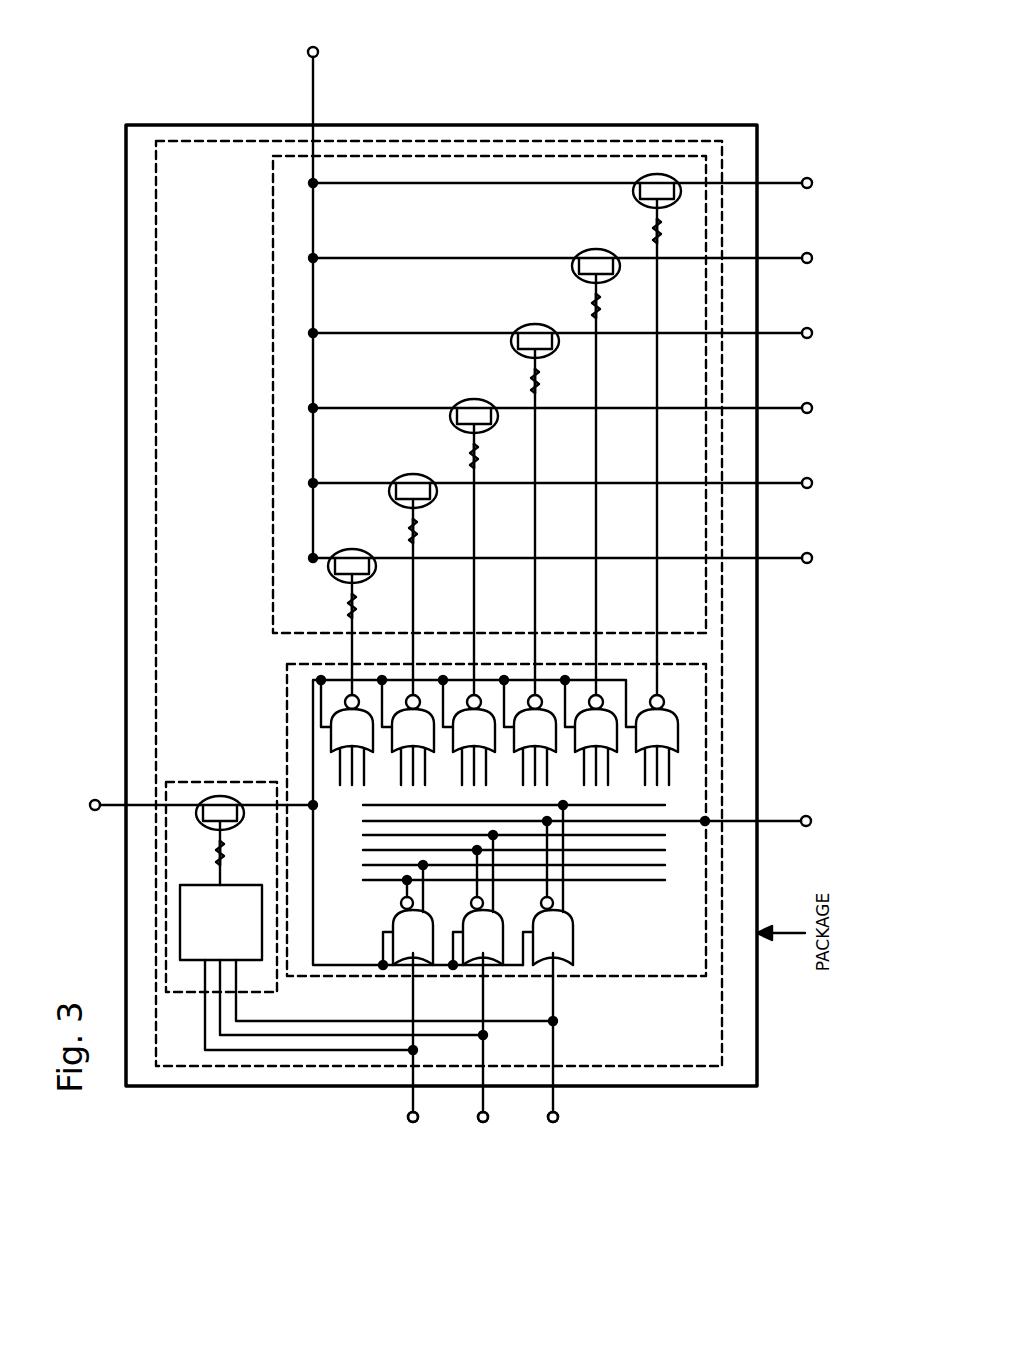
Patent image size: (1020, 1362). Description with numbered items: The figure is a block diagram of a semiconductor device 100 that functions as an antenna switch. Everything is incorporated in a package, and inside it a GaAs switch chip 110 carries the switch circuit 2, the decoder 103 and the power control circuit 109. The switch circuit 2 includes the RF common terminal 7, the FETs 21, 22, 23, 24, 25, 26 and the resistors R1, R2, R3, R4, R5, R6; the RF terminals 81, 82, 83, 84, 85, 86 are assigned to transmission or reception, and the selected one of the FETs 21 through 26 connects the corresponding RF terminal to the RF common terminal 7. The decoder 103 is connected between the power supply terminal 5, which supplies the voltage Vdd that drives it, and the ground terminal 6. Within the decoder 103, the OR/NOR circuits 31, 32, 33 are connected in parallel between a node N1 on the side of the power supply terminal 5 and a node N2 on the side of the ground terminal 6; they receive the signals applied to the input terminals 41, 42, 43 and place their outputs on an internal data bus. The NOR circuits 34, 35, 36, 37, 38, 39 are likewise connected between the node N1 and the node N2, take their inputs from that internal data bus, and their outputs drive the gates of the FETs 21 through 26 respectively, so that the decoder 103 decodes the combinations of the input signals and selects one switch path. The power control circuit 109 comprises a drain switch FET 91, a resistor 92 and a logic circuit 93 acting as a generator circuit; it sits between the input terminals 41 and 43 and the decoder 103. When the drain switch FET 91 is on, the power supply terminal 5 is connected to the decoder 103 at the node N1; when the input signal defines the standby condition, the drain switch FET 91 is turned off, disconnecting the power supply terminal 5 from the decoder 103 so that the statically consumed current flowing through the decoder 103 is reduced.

The semiconductor device 100 is at (73, 578).
The GaAs switch chip 110 is at (156, 433).
The switch circuit 2 is at (272, 390).
The decoder 103 is at (706, 790).
The power control circuit 109 is at (205, 782).
The RF common terminal 7 is at (307, 50).
The power supply terminal 5 is at (92, 800).
The ground terminal 6 is at (810, 816).
The RF terminal 81 is at (810, 562).
The RF terminal 82 is at (812, 485).
The RF terminal 83 is at (810, 413).
The RF terminal 84 is at (812, 336).
The RF terminal 85 is at (812, 261).
The RF terminal 86 is at (812, 180).
The FET 21 is at (329, 564).
The FET 22 is at (390, 489).
The FET 23 is at (451, 414).
The FET 24 is at (512, 339).
The FET 25 is at (573, 264).
The FET 26 is at (634, 189).
The resistor R1 is at (346, 604).
The resistor R2 is at (407, 529).
The resistor R3 is at (468, 454).
The resistor R4 is at (529, 379).
The resistor R5 is at (590, 304).
The resistor R6 is at (651, 229).
The OR/NOR circuit 31 is at (393, 923).
The OR/NOR circuit 32 is at (463, 923).
The OR/NOR circuit 33 is at (533, 923).
The NOR circuit 34 is at (374, 738).
The NOR circuit 35 is at (435, 738).
The NOR circuit 36 is at (496, 738).
The NOR circuit 37 is at (557, 738).
The NOR circuit 38 is at (618, 738).
The NOR circuit 39 is at (679, 738).
The input terminal 41 is at (409, 1122).
The input terminal 42 is at (479, 1122).
The input terminal 43 is at (549, 1122).
The drain switch FET 91 is at (230, 797).
The resistor 92 is at (227, 852).
The logic circuit 93 is at (202, 883).
The node N1 is at (311, 800).
The node N2 is at (708, 825).